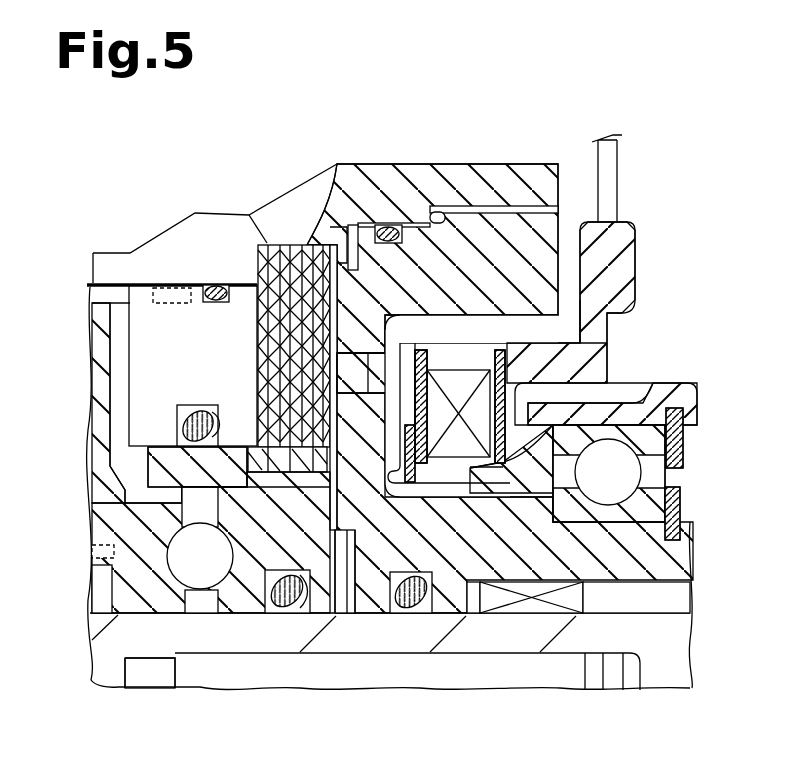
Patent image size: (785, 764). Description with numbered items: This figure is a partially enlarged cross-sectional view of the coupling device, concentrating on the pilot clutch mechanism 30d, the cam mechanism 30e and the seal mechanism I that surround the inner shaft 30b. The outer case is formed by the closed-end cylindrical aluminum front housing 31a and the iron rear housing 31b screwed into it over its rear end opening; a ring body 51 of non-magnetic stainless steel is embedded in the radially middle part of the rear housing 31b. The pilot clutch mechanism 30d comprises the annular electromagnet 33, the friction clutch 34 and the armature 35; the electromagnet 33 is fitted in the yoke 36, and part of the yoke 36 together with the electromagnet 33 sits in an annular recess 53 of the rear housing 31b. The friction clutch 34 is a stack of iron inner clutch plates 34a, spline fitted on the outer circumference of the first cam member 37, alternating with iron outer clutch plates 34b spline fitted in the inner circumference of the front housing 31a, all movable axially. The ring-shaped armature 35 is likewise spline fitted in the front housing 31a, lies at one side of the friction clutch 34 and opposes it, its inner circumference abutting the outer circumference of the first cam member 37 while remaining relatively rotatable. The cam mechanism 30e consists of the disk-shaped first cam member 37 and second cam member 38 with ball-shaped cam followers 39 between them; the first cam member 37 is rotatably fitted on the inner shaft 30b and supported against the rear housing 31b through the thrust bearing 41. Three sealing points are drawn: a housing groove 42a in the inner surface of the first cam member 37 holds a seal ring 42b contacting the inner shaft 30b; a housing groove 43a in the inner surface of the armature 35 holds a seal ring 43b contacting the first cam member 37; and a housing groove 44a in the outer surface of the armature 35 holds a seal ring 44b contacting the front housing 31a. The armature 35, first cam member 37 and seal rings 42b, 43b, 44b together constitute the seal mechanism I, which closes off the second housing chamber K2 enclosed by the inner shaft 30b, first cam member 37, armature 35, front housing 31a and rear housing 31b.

The seal mechanism I is at (176, 268).
The inner shaft 30b is at (500, 655).
The pilot clutch mechanism 30d is at (408, 325).
The cam mechanism 30e is at (207, 628).
The front housing 31a is at (235, 218).
The rear housing 31b is at (495, 195).
The electromagnet 33 is at (490, 487).
The friction clutch 34 is at (284, 215).
The inner clutch plates 34a is at (330, 447).
The outer clutch plates 34b is at (337, 164).
The armature 35 is at (170, 303).
The yoke 36 is at (690, 400).
The first cam member 37 is at (290, 616).
The second cam member 38 is at (100, 518).
The cam follower 39 is at (208, 614).
The thrust bearing 41 is at (350, 613).
The housing groove 42a is at (297, 568).
The seal ring 42b is at (274, 578).
The housing groove 43a is at (185, 402).
The seal ring 43b is at (257, 408).
The housing groove 44a is at (158, 306).
The seal ring 44b is at (218, 290).
The ring body 51 is at (356, 360).
The annular recess 53 is at (450, 497).
The second housing chamber K2 is at (350, 258).